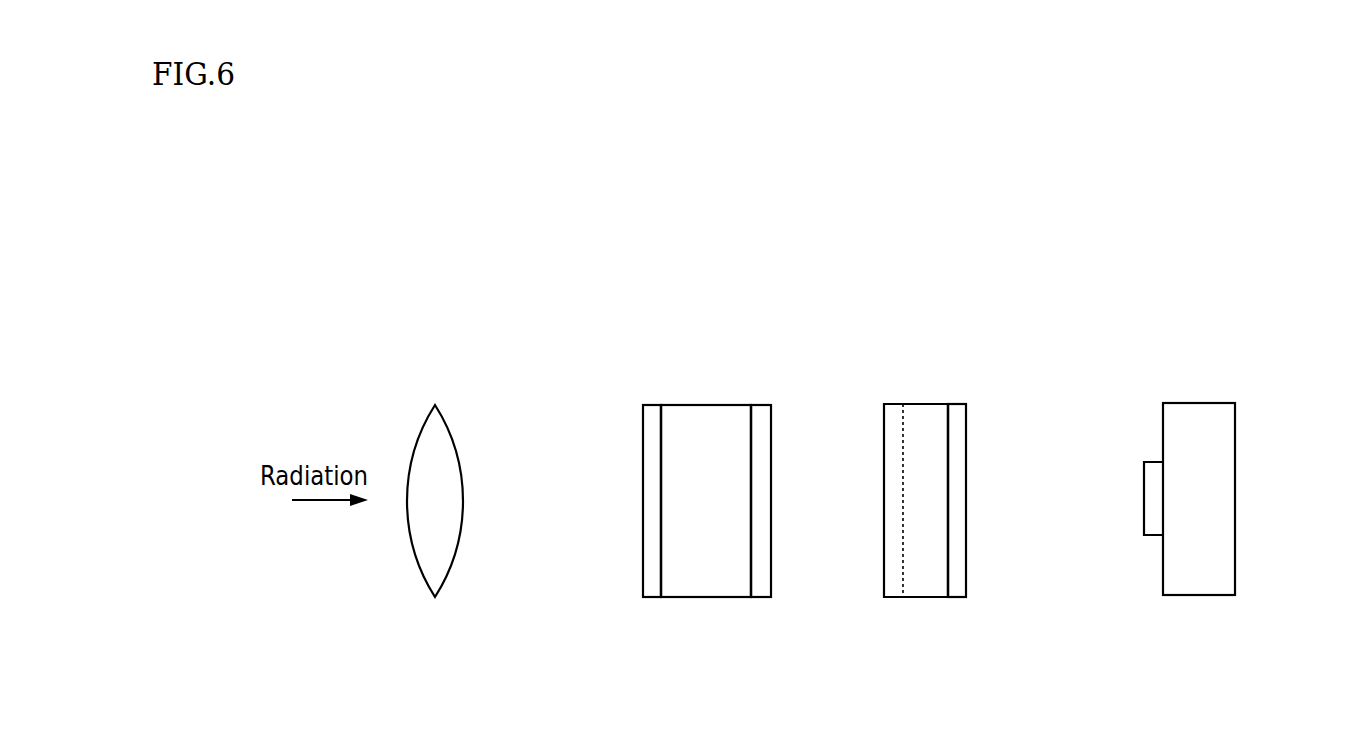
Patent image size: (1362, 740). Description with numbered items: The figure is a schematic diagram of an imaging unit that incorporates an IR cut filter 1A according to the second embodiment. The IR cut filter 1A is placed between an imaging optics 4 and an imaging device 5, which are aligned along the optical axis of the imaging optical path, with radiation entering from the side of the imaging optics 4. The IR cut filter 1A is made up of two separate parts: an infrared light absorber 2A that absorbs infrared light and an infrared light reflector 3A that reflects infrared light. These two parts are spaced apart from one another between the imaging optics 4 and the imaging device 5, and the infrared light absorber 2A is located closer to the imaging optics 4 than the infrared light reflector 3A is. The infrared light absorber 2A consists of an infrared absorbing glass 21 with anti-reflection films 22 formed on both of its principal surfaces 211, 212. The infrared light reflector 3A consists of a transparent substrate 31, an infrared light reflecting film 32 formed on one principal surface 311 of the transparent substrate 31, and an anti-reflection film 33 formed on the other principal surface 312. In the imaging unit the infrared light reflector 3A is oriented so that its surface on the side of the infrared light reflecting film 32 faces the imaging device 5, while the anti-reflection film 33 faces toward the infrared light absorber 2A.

The IR cut filter 1A is at (968, 678).
The infrared light absorber 2A is at (700, 490).
The infrared light reflector 3A is at (933, 471).
The imaging optics 4 is at (444, 443).
The imaging device 5 is at (1224, 442).
The infrared absorbing glass 21 is at (695, 418).
The principal surface 211 is at (663, 428).
The principal surface 212 is at (750, 428).
The anti-reflection films 22 is at (648, 500).
The transparent substrate 31 is at (922, 417).
The principal surface 311 is at (948, 433).
The principal surface 312 is at (903, 437).
The infrared light reflecting film 32 is at (960, 497).
The anti-reflection film 33 is at (892, 540).